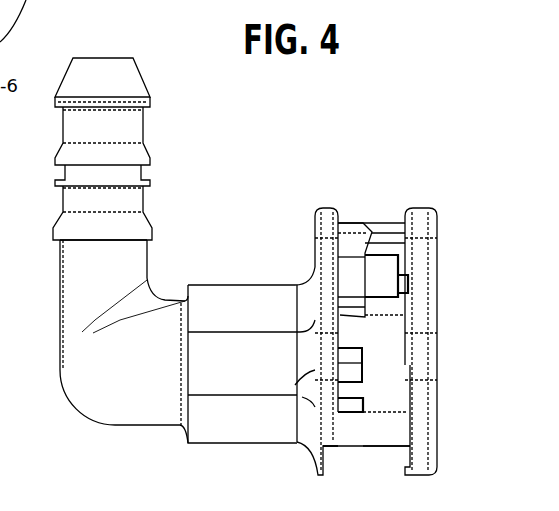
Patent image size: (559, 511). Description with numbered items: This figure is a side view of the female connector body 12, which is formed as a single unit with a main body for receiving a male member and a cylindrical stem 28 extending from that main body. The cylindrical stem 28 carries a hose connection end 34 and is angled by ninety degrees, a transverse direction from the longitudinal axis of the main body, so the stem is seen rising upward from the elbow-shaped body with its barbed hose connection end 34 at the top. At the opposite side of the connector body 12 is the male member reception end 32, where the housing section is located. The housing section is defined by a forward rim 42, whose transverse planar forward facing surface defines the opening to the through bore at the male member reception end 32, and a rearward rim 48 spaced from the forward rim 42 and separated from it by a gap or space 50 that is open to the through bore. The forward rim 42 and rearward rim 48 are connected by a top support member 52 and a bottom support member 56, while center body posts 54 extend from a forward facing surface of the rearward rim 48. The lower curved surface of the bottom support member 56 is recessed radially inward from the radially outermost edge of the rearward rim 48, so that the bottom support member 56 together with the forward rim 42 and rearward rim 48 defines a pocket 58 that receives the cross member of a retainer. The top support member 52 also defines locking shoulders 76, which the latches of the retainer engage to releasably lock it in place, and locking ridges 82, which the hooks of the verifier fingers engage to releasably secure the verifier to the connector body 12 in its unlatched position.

The female connector body 12 is at (401, 130).
The cylindrical stem 28 is at (90, 221).
The male member reception end 32 is at (446, 319).
The hose connection end 34 is at (134, 81).
The forward rim 42 is at (415, 212).
The rearward rim 48 is at (328, 227).
The gap or space 50 is at (394, 395).
The top support member 52 is at (355, 212).
The center body posts 54 is at (347, 372).
The bottom support member 56 is at (380, 436).
The pocket 58 is at (349, 460).
The locking shoulders 76 is at (382, 300).
The locking ridges 82 is at (355, 295).